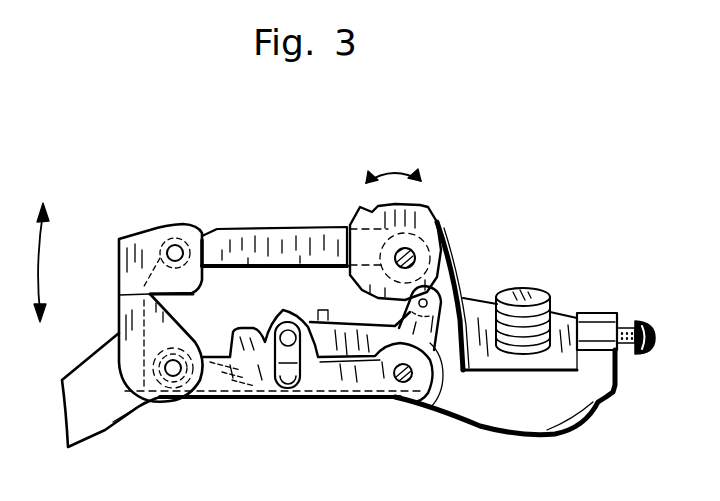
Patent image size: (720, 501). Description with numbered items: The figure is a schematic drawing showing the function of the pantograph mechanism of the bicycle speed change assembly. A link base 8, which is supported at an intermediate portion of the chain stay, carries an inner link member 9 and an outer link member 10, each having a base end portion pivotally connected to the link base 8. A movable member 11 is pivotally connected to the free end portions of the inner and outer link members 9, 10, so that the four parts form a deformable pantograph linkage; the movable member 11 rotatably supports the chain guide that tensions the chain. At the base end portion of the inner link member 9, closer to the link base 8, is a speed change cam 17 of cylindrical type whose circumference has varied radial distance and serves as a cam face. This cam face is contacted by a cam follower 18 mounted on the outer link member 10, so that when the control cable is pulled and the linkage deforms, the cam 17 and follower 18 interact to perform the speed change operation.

The link base 8 is at (460, 265).
The inner link member 9 is at (277, 225).
The outer link member 10 is at (248, 402).
The movable member 11 is at (143, 237).
The speed change cam 17 is at (427, 206).
The cam follower 18 is at (437, 390).